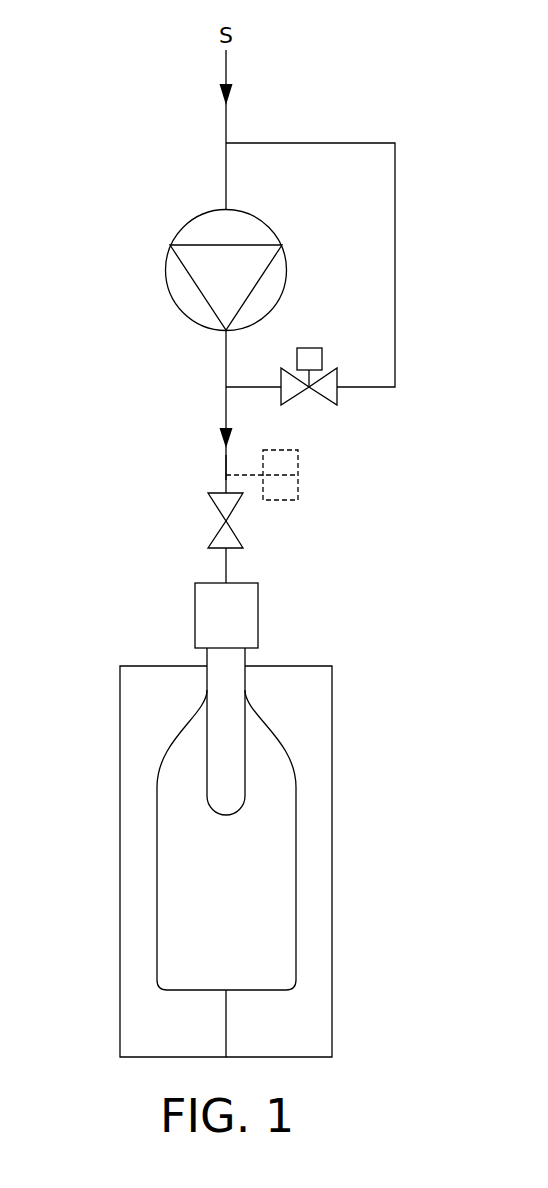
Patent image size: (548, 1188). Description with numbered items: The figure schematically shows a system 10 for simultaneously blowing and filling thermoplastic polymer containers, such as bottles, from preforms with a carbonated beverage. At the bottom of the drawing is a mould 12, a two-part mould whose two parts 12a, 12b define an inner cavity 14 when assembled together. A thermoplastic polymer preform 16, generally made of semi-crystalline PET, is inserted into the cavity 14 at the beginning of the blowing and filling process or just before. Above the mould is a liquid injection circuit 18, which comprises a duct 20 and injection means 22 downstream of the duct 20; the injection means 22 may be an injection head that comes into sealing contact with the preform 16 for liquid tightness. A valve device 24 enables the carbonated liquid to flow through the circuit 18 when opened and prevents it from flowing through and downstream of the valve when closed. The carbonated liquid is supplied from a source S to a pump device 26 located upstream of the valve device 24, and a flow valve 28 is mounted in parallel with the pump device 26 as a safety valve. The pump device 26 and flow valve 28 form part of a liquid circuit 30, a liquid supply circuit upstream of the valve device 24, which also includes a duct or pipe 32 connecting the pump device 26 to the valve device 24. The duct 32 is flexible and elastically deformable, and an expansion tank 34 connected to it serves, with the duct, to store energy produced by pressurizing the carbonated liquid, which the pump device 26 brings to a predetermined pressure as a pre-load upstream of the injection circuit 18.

The system 10 is at (444, 181).
The mould 12 is at (246, 861).
The mould part 12a is at (130, 878).
The mould part 12b is at (322, 880).
The inner cavity 14 is at (172, 835).
The thermoplastic polymer preform 16 is at (233, 793).
The liquid injection circuit 18 is at (134, 590).
The duct 20 is at (228, 568).
The injection means 22 is at (258, 612).
The valve device 24 is at (215, 535).
The pump device 26 is at (139, 271).
The flow valve 28 is at (318, 414).
The liquid circuit 30 is at (207, 370).
The duct or pipe 32 is at (226, 461).
The expansion tank 34 is at (298, 490).